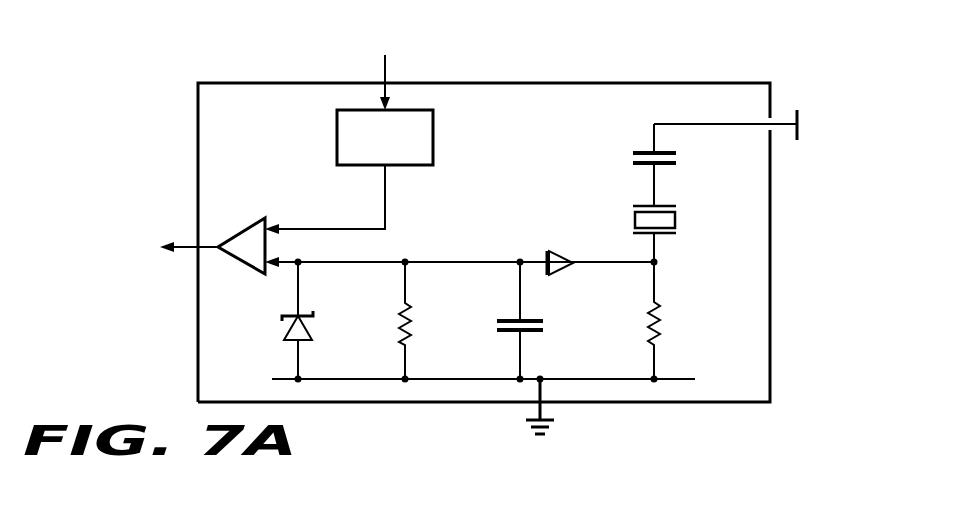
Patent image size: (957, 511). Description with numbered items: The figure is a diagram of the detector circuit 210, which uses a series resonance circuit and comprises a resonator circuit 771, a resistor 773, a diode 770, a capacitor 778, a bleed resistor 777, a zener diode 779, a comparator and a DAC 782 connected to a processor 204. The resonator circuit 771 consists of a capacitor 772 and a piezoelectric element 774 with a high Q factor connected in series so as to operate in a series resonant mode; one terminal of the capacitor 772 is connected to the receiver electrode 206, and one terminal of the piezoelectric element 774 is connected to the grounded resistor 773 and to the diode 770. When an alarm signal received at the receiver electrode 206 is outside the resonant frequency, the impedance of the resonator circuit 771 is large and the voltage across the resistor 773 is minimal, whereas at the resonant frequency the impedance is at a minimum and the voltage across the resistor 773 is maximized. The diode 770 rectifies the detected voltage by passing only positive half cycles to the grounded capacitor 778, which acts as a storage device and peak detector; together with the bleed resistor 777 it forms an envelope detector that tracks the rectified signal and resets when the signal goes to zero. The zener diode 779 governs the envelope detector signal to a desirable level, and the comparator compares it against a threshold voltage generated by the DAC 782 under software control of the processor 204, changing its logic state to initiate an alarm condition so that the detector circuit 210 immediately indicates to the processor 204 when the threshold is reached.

The detector circuit 210 is at (254, 126).
The processor 204 is at (254, 148).
The receiver electrode 206 is at (800, 122).
The DAC 782 is at (436, 142).
The zener diode 779 is at (313, 329).
The bleed resistor 777 is at (410, 336).
The capacitor 778 is at (497, 323).
The diode 770 is at (560, 235).
The resonator circuit 771 is at (659, 191).
The capacitor 772 is at (634, 157).
The piezoelectric element 774 is at (632, 219).
The resistor 773 is at (660, 338).